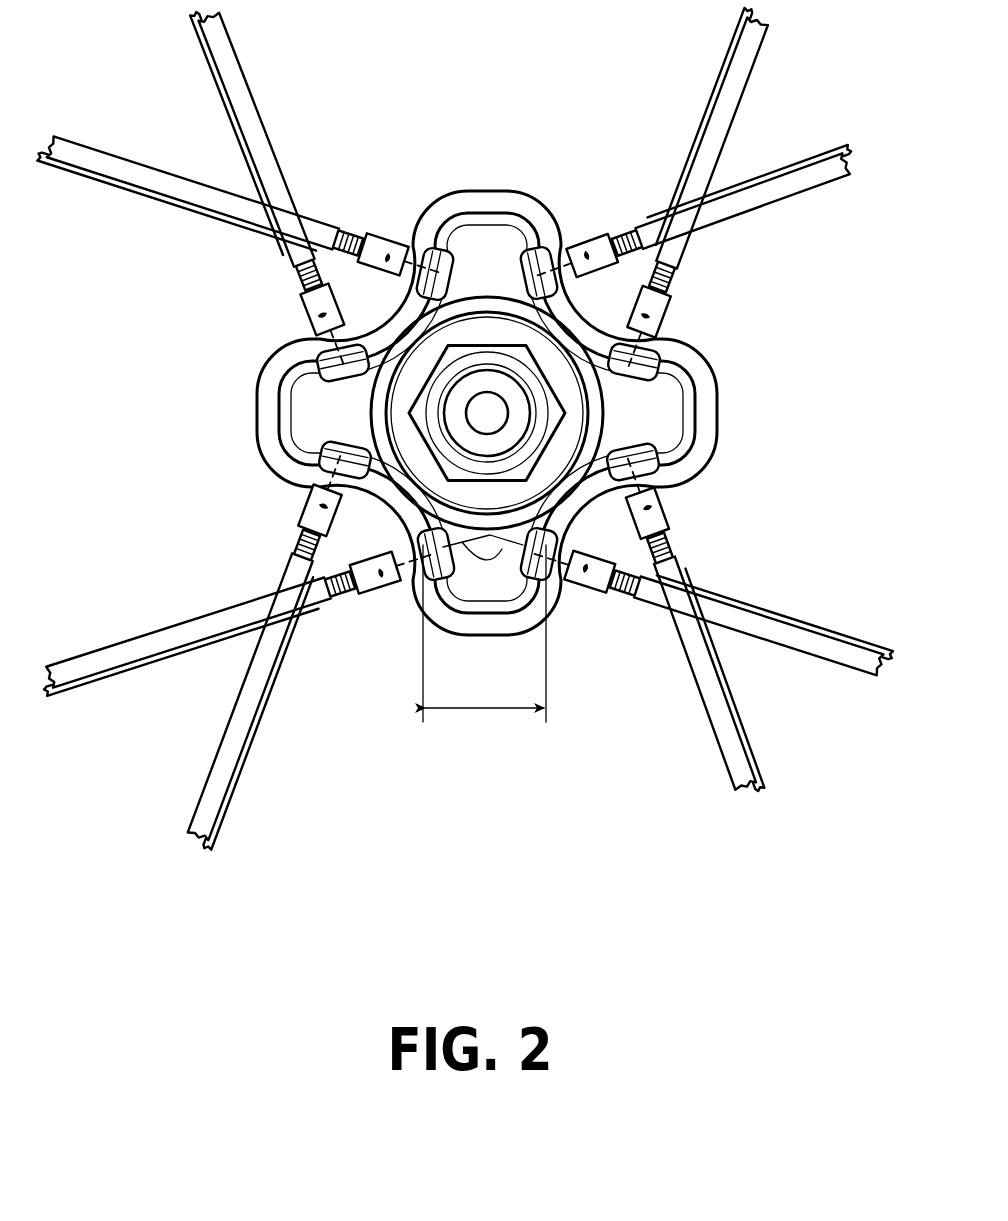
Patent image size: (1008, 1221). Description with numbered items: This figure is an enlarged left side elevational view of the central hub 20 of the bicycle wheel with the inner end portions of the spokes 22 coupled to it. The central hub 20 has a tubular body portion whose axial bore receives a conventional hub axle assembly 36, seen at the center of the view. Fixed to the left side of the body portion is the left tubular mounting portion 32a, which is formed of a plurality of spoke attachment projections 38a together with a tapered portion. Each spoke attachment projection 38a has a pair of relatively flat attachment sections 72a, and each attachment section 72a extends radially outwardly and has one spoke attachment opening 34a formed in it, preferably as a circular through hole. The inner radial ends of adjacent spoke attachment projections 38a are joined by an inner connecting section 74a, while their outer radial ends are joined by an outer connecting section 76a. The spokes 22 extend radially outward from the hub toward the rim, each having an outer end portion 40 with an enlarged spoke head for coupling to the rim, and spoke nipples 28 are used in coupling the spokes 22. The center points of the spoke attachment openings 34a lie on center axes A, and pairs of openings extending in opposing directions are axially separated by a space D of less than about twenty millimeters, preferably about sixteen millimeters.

The central hub 20 is at (465, 425).
The spokes 22 is at (465, 427).
The spoke nipples 28 is at (646, 432).
The left tubular mounting portion 32a is at (516, 378).
The spoke attachment opening 34a is at (285, 446).
The hub axle assembly 36 is at (484, 338).
The spoke attachment projection 38a is at (546, 206).
The outer end portion 40 is at (237, 622).
The attachment section 72a is at (568, 389).
The inner connecting section 74a is at (296, 265).
The outer connecting section 76a is at (488, 198).
The center axis A is at (483, 571).
The space D is at (484, 656).